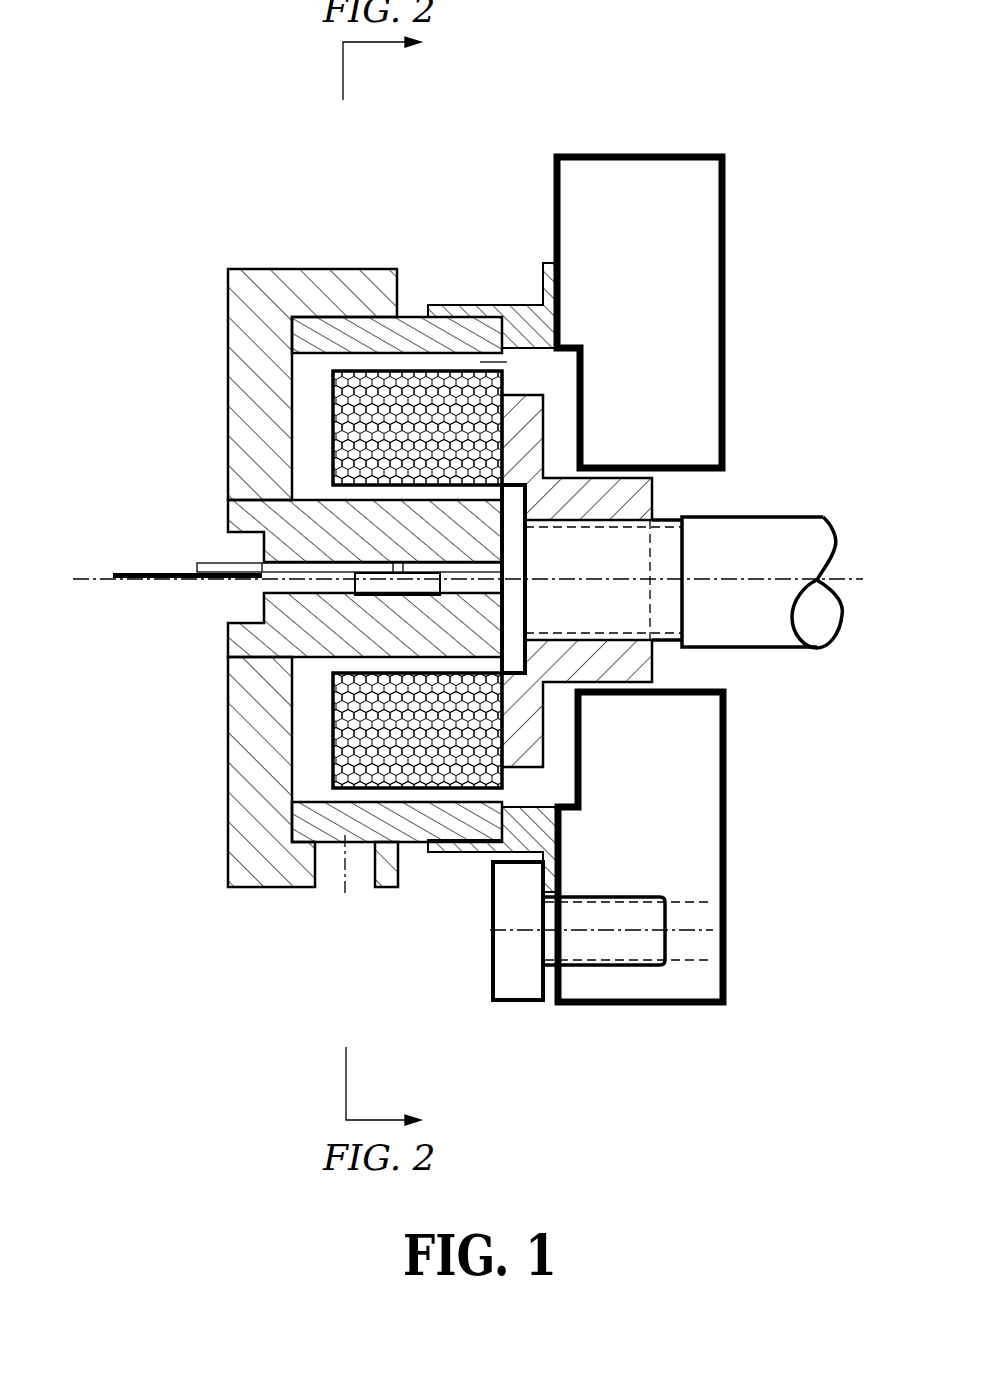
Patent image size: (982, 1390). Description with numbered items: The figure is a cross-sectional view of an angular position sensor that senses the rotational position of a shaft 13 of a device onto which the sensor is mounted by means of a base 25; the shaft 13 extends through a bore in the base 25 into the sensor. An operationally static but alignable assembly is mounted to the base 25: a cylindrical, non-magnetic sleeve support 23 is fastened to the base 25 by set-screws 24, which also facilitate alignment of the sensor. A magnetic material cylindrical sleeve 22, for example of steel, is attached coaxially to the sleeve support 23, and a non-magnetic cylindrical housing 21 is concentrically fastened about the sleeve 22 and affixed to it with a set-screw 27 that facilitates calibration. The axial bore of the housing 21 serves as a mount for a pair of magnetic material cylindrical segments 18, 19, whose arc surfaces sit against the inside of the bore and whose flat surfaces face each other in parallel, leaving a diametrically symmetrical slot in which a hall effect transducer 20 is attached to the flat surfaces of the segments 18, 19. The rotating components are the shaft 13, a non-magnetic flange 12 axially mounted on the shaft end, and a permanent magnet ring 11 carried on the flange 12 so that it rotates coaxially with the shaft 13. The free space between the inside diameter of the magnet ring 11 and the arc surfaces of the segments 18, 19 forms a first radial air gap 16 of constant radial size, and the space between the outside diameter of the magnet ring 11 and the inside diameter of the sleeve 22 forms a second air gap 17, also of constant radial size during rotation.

The permanent magnet ring 11 is at (470, 740).
The flange 12 is at (613, 655).
The shaft 13 is at (732, 535).
The first radial air gap 16 is at (297, 662).
The second air gap 17 is at (480, 362).
The magnetic material cylindrical segment 18 is at (232, 523).
The magnetic material cylindrical segment 19 is at (235, 633).
The hall effect transducer 20 is at (208, 560).
The cylindrical housing 21 is at (247, 313).
The cylindrical sleeve 22 is at (397, 332).
The sleeve support 23 is at (523, 310).
The set-screw 24 is at (517, 988).
The base 25 is at (607, 180).
The set-screw 27 is at (331, 875).